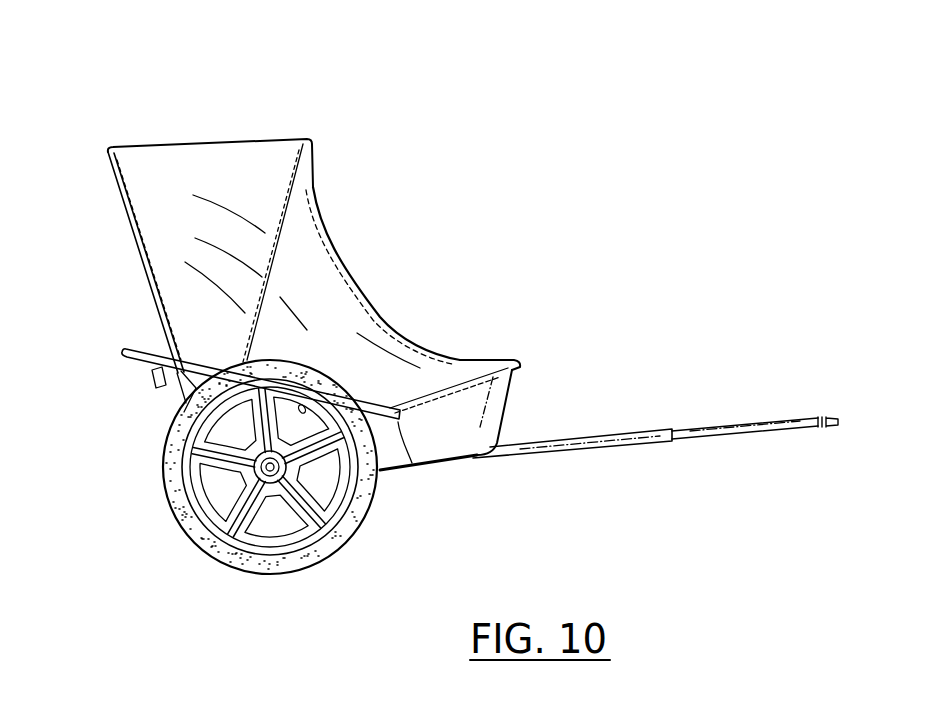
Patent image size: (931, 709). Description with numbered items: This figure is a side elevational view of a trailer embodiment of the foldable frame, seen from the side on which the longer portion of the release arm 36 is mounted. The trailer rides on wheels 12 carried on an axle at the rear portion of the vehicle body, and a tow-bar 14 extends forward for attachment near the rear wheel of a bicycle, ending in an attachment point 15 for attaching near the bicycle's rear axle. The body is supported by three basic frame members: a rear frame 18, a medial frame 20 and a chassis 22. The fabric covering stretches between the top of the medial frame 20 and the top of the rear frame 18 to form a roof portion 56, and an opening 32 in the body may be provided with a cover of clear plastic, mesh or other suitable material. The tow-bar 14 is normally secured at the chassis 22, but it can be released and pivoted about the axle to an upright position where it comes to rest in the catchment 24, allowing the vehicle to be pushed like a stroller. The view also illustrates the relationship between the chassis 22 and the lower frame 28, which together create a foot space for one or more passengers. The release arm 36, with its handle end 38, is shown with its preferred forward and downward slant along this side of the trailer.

The wheels 12 is at (363, 517).
The tow-bar 14 is at (607, 432).
The attachment point 15 is at (835, 413).
The rear frame 18 is at (117, 183).
The medial frame 20 is at (293, 178).
The chassis 22 is at (520, 366).
The catchment 24 is at (152, 380).
The lower frame 28 is at (467, 458).
The opening 32 is at (347, 273).
The release arm 36 is at (177, 393).
The handle end 38 is at (417, 461).
The roof portion 56 is at (195, 144).